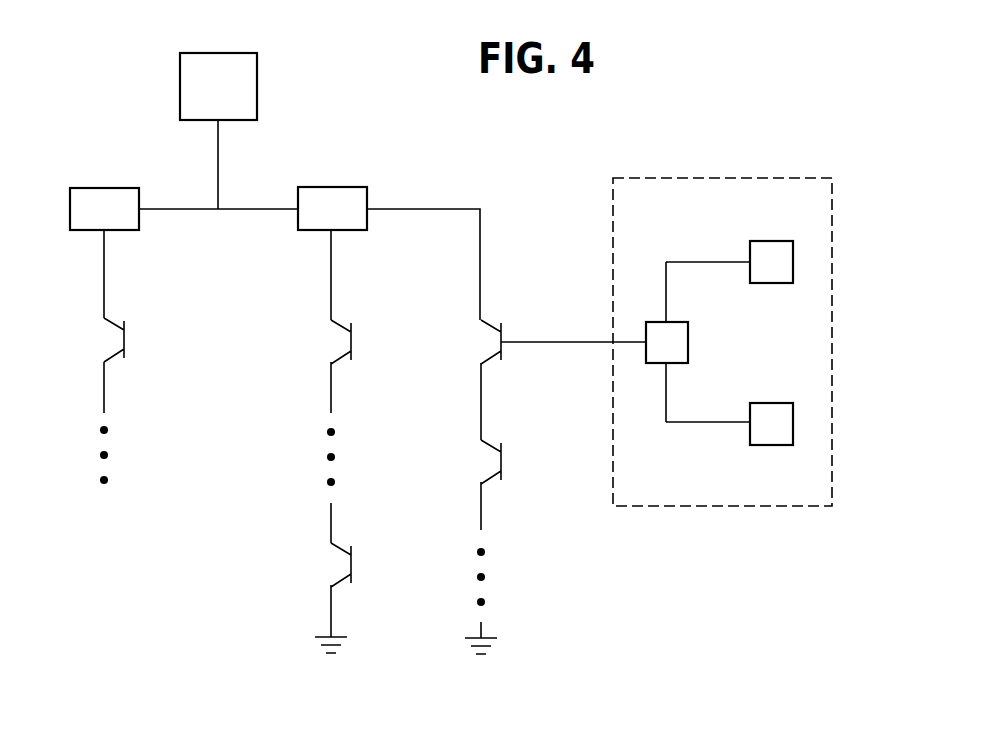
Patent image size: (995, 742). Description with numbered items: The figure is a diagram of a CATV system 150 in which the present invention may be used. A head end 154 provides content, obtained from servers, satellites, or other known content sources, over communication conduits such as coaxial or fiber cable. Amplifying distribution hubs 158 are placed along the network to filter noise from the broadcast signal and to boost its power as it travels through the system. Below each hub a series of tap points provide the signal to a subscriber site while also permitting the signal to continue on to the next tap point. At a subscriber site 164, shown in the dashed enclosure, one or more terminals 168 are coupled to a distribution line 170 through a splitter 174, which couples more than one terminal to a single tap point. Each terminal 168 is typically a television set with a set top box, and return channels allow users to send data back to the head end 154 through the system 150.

The CATV system 150 is at (186, 586).
The head end 154 is at (180, 80).
The amplifying distribution hub 158 is at (100, 188).
The subscriber site 164 is at (768, 178).
The terminal 168 is at (766, 241).
The distribution line 170 is at (457, 206).
The splitter 174 is at (688, 343).